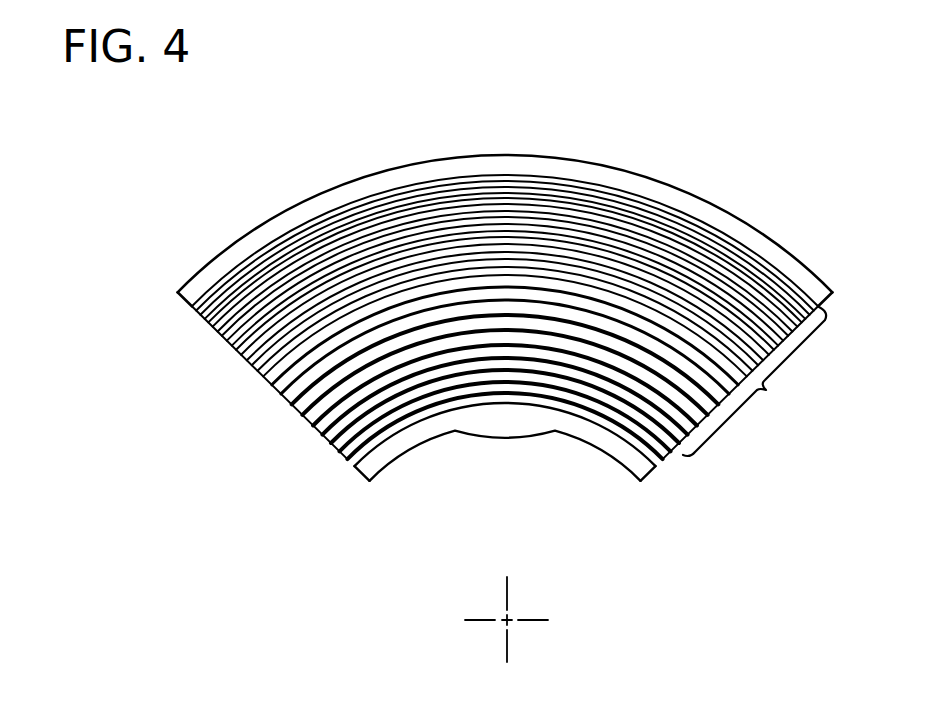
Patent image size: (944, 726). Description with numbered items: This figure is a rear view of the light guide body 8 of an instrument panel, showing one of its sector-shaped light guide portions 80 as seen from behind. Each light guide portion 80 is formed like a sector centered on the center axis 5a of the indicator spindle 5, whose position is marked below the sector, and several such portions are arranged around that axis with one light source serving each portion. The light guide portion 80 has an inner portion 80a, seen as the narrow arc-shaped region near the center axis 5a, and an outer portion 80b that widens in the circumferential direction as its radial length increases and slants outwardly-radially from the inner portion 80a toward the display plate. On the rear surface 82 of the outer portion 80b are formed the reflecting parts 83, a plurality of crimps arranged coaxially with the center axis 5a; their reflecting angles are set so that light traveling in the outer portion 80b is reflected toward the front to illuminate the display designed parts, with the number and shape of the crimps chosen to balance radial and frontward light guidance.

The light guide body 8 is at (414, 141).
The light guide portion 80 is at (505, 153).
The inner portion 80a is at (414, 475).
The outer portion 80b is at (545, 170).
The rear surface 82 is at (658, 438).
The reflecting parts 83 is at (754, 381).
The indicator spindle 5 is at (518, 609).
The center axis 5a is at (509, 622).